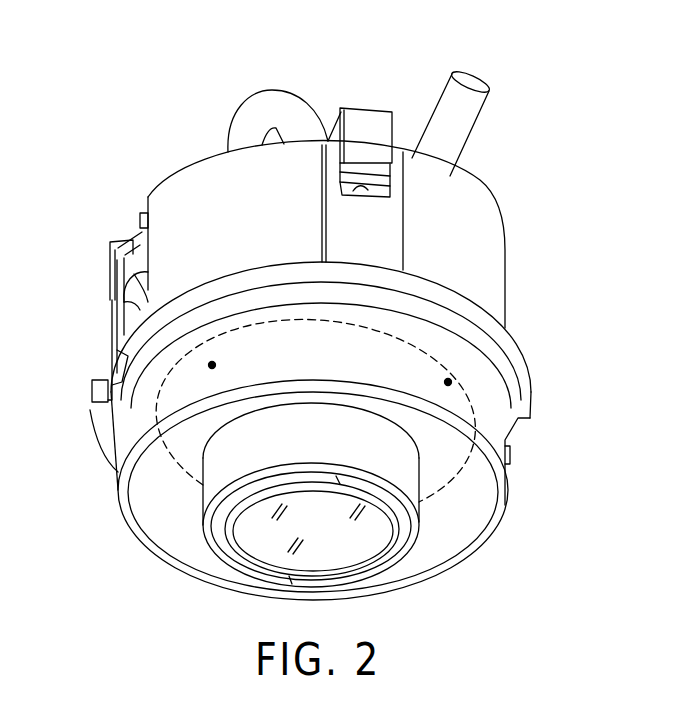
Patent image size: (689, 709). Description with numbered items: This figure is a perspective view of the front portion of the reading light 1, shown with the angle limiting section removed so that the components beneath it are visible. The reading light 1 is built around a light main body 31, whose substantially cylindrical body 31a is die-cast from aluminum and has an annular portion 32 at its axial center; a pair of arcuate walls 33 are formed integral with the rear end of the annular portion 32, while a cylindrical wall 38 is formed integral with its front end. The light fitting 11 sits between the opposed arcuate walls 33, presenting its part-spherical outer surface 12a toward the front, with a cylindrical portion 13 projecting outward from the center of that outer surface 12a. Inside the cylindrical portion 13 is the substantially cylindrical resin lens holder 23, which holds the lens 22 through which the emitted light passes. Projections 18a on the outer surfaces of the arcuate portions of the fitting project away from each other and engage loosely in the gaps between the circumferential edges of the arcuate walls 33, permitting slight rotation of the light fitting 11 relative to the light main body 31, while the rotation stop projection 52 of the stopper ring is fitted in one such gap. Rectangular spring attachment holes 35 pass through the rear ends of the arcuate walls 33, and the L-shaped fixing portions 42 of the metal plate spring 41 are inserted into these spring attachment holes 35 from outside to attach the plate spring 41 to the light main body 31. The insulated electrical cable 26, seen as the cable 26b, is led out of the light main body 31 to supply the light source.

The reading light 1 is at (527, 238).
The light fitting 11 is at (190, 500).
The outer surface 12a is at (177, 447).
The cylindrical portion 13 is at (362, 428).
The projections 18a is at (148, 297).
The lens 22 is at (367, 550).
The lens holder 23 is at (233, 567).
The electrical cable 26 is at (247, 95).
The cable 26b is at (467, 107).
The light main body 31 is at (158, 162).
The cylindrical body 31a is at (507, 322).
The annular portion 32 is at (90, 412).
The arcuate walls 33 is at (473, 210).
The spring attachment hole 35 is at (363, 188).
The cylindrical wall 38 is at (490, 398).
The plate spring 41 is at (361, 96).
The fixing portions 42 is at (375, 127).
The rotation stop projection 52 is at (137, 247).